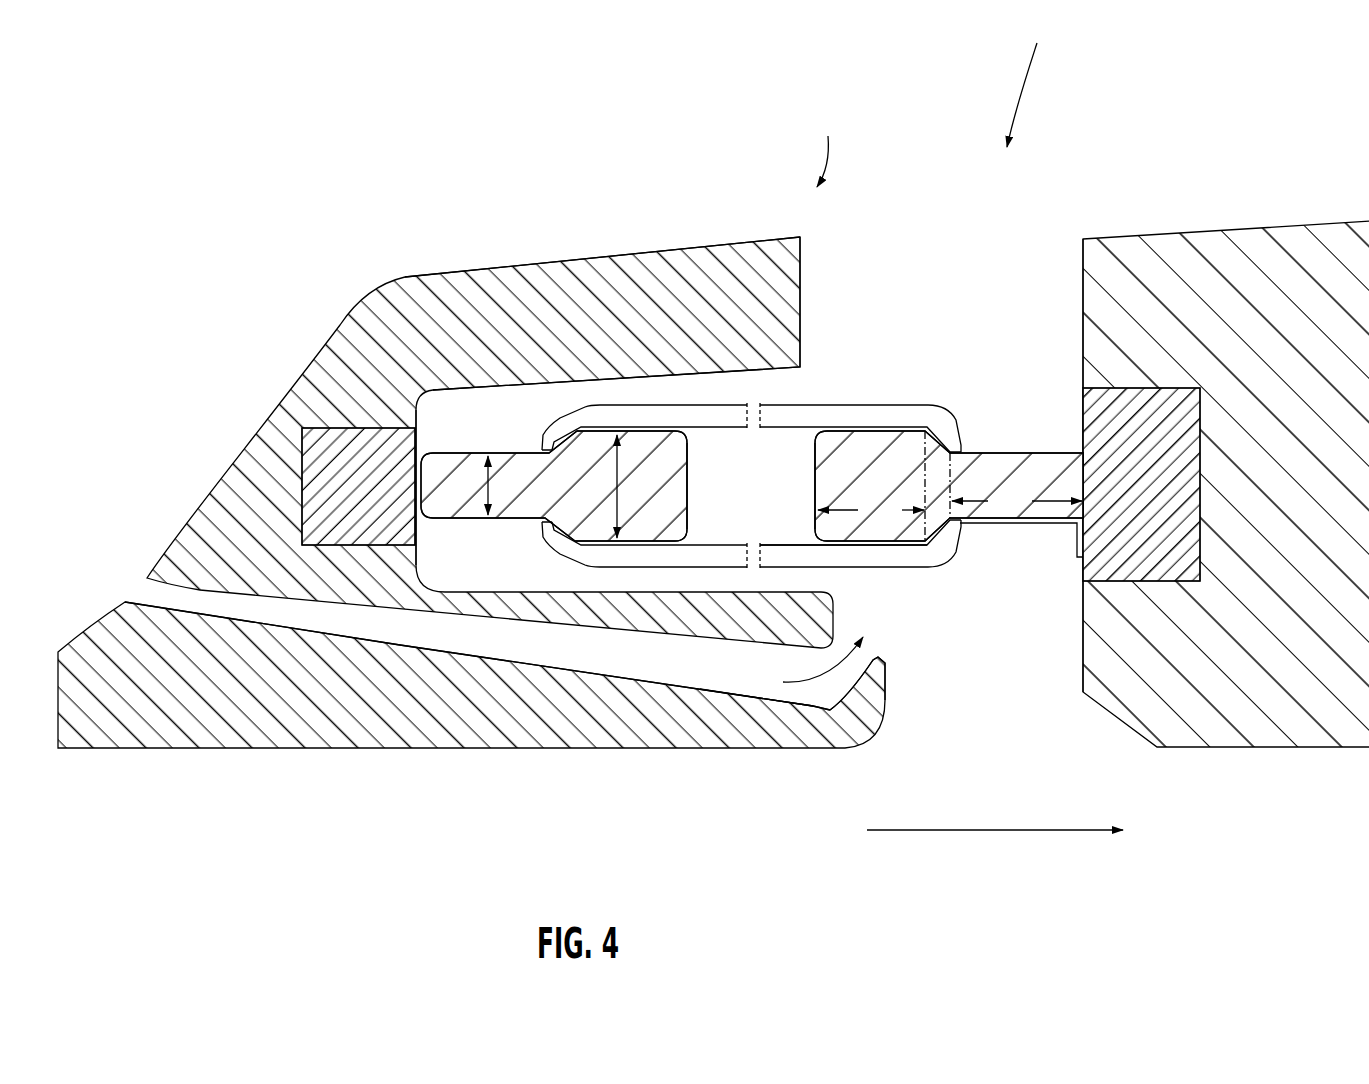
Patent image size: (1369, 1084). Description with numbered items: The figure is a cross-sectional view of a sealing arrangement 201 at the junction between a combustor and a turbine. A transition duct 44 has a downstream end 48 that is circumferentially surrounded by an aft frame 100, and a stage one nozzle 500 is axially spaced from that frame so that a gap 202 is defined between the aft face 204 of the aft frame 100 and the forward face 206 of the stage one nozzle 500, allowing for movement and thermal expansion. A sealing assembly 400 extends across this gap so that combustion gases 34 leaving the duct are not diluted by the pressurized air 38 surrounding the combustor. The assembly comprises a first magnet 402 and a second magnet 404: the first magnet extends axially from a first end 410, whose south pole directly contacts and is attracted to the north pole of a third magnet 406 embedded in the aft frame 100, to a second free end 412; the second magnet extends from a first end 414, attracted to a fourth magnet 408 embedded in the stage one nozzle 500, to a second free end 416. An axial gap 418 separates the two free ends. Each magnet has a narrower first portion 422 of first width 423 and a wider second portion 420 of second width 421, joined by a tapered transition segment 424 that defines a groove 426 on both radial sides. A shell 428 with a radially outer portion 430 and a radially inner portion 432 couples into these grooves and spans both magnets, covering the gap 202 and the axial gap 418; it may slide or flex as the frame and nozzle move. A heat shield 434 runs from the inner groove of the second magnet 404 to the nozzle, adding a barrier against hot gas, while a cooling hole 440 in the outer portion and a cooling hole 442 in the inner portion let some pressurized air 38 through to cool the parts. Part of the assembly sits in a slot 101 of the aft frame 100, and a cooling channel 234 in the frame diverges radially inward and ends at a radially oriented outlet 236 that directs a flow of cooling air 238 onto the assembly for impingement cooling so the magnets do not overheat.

The combustion gases 34 is at (997, 832).
The pressurized air 38 is at (1023, 77).
The transition duct 44 is at (506, 603).
The downstream end 48 is at (828, 145).
The aft frame 100 is at (506, 504).
The slot 101 is at (506, 528).
The sealing arrangement 201 is at (545, 108).
The gap 202 is at (955, 293).
The aft face 204 is at (800, 288).
The forward face 206 is at (1083, 662).
The cooling channel 234 is at (333, 640).
The outlet 236 is at (885, 693).
The flow of cooling air 238 is at (823, 680).
The sealing assembly 400 is at (702, 447).
The first magnet 402 is at (520, 468).
The second magnet 404 is at (978, 452).
The third magnet 406 is at (360, 422).
The fourth magnet 408 is at (1190, 583).
The first end 410 is at (418, 495).
The second free end 412 is at (690, 524).
The first end 414 is at (1082, 477).
The second free end 416 is at (813, 485).
The axial gap 418 is at (773, 510).
The second portion 420 is at (650, 169).
The second width 421 is at (615, 486).
The first portion 422 is at (340, 232).
The first width 423 is at (493, 489).
The transition segment 424 is at (750, 447).
The groove 426 is at (773, 447).
The shell 428 is at (751, 447).
The radially outer portion 430 is at (797, 417).
The radially inner portion 432 is at (663, 566).
The heat shield 434 is at (1005, 527).
The cooling hole 440 is at (740, 412).
The cooling hole 442 is at (747, 566).
The stage one nozzle 500 is at (1164, 445).